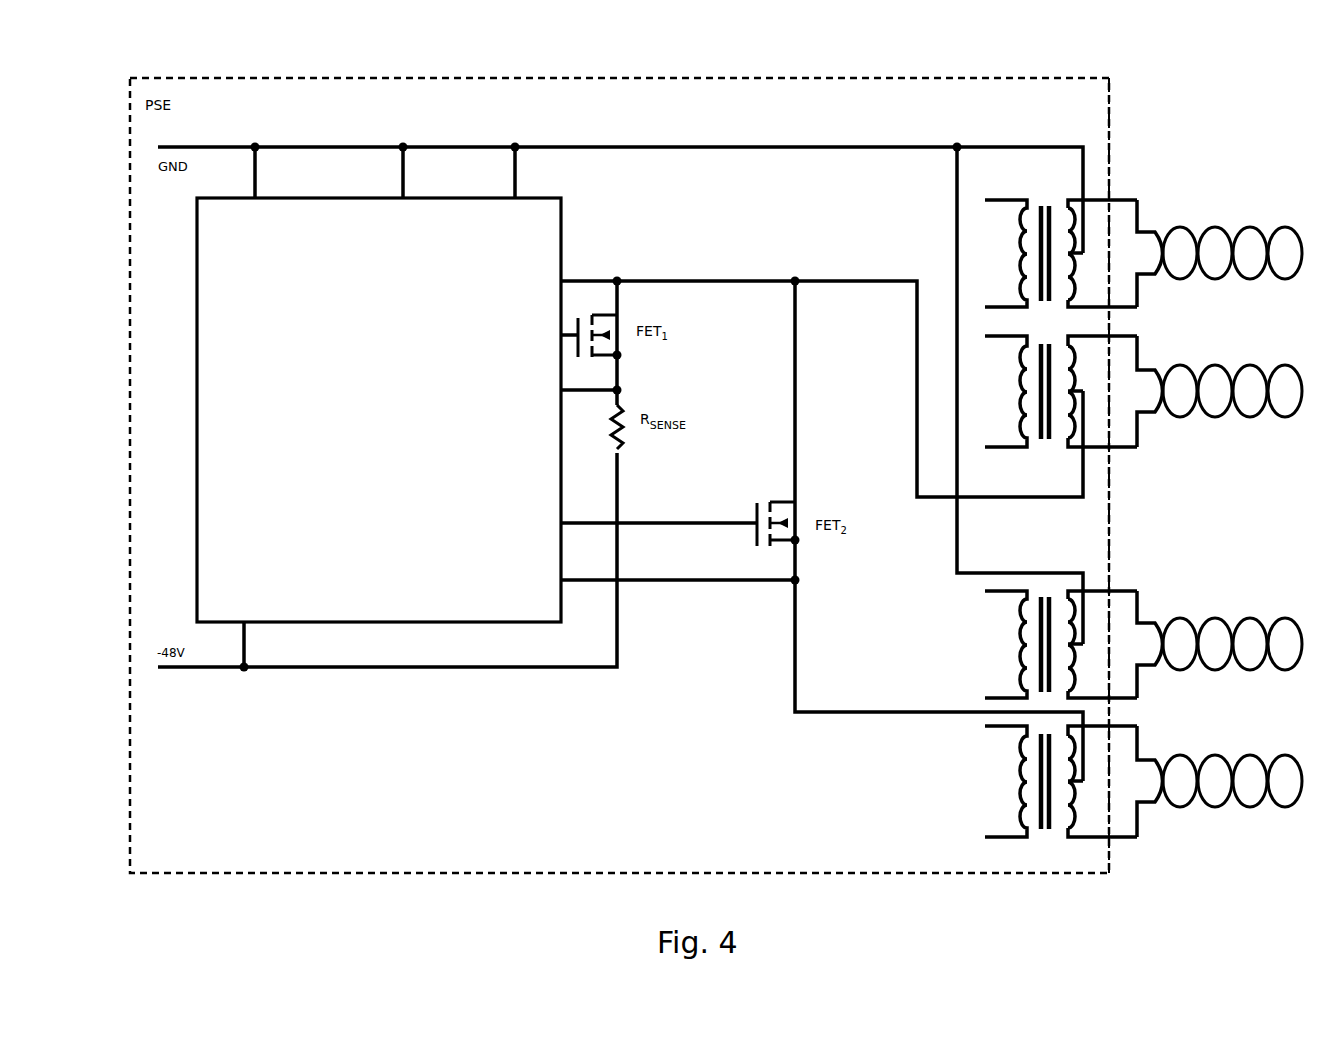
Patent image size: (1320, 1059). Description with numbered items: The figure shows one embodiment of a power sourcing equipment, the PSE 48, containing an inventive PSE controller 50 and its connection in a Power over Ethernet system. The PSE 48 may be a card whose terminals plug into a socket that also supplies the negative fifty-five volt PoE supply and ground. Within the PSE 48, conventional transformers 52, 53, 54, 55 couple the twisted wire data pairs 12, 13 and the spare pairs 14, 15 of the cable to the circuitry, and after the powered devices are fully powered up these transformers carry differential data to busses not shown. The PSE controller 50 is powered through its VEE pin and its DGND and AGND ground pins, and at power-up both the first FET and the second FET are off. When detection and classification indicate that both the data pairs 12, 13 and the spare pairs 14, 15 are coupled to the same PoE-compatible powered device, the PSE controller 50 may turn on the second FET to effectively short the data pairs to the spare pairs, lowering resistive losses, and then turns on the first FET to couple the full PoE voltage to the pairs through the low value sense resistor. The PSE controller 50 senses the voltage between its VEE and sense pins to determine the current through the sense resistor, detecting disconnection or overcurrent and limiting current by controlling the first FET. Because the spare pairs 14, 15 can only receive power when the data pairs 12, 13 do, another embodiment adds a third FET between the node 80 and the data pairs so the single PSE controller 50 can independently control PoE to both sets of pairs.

The data pair 12 is at (1210, 207).
The data pair 13 is at (1205, 353).
The spare pair 14 is at (1200, 600).
The spare pair 15 is at (1210, 740).
The PSE 48 is at (1115, 142).
The PSE controller 50 is at (333, 505).
The transformer 52 is at (1020, 267).
The transformer 53 is at (1020, 405).
The transformer 54 is at (1010, 621).
The transformer 55 is at (1003, 756).
The node 80 is at (789, 272).